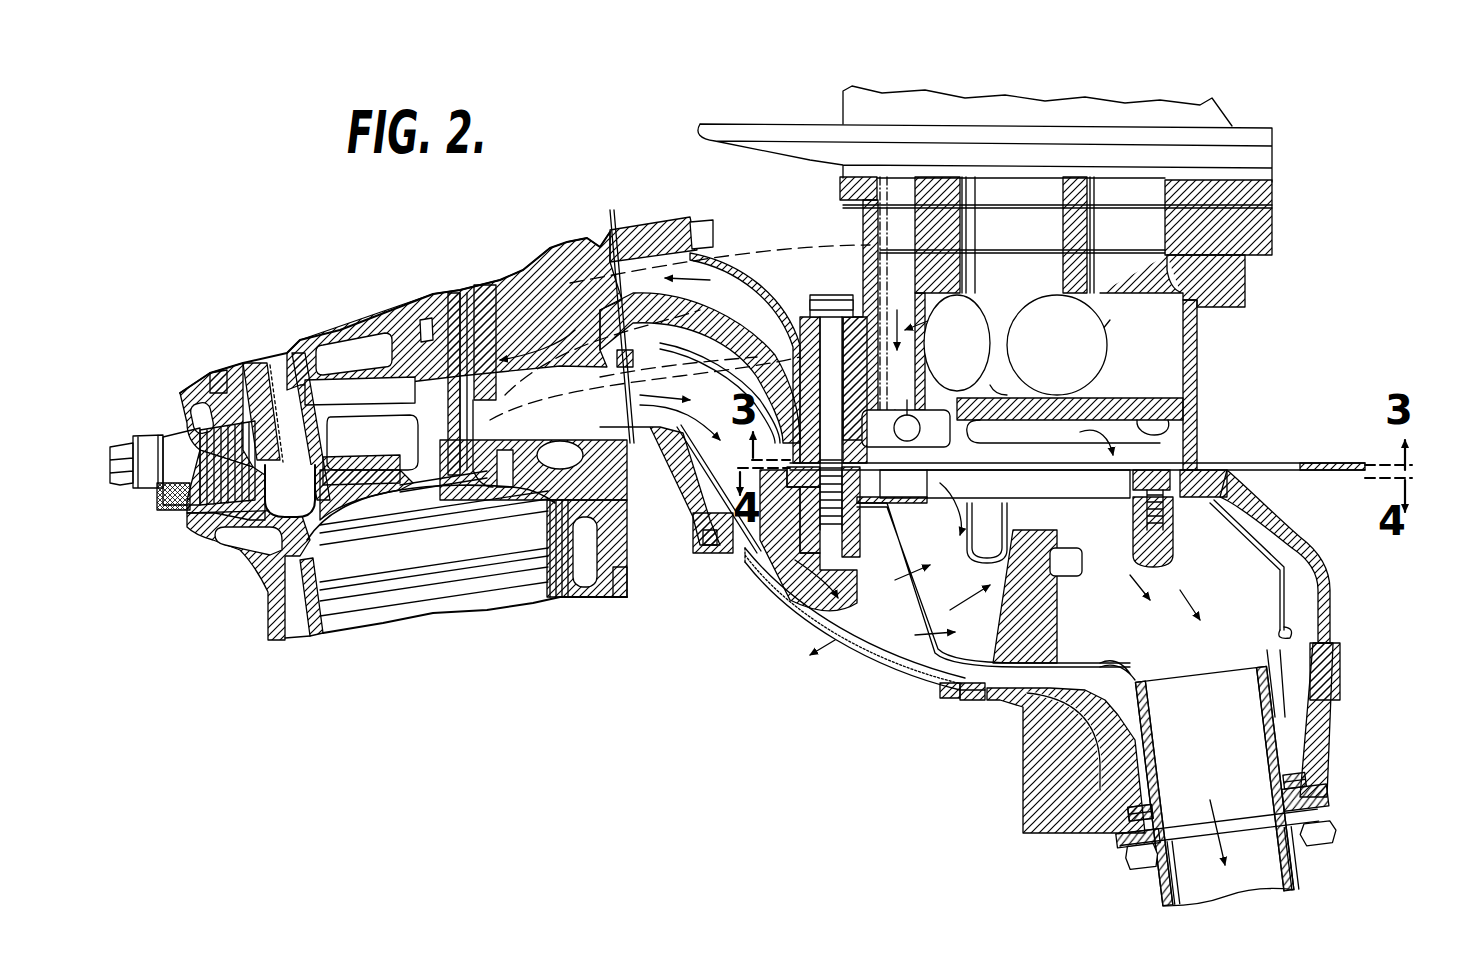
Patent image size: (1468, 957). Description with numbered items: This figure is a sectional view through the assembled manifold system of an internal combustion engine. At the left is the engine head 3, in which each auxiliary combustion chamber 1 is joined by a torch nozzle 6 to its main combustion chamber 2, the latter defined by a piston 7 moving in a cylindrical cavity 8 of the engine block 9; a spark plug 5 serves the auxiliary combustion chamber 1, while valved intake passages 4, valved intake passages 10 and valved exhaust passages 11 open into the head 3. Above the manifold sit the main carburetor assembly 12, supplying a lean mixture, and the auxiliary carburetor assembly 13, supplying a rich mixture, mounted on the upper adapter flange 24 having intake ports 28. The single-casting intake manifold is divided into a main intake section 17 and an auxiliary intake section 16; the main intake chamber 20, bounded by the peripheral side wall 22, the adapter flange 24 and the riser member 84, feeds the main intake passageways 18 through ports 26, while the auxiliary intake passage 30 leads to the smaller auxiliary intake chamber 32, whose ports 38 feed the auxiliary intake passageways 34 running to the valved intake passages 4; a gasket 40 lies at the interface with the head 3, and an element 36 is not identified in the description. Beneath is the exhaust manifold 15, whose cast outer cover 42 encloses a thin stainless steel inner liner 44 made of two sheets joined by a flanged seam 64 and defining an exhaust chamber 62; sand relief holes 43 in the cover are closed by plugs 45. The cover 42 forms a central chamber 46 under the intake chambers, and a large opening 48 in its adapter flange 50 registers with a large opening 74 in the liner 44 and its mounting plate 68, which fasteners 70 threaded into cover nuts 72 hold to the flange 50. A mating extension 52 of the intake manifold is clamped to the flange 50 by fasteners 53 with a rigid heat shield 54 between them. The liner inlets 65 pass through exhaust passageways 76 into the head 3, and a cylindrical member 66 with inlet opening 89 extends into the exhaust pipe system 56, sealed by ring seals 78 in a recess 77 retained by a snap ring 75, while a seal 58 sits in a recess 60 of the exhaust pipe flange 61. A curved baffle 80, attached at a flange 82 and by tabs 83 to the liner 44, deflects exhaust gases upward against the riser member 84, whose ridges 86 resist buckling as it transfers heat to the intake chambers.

The auxiliary combustion chamber 1 is at (220, 540).
The main combustion chamber 2 is at (385, 478).
The engine head 3 is at (180, 405).
The valved intake passages 4 is at (310, 375).
The spark plug 5 is at (172, 512).
The torch nozzle 6 is at (320, 490).
The piston 7 is at (432, 608).
The cylindrical cavity 8 is at (548, 600).
The engine block 9 is at (622, 597).
The valved intake passages 10 is at (585, 262).
The valved exhaust passages 11 is at (628, 470).
The main carburetor assembly 12 is at (1133, 190).
The auxiliary carburetor assembly 13 is at (895, 185).
The exhaust manifold 15 is at (830, 638).
The auxiliary intake section 16 is at (780, 248).
The main intake section 17 is at (815, 262).
The main intake passageways 18 is at (822, 265).
The main intake chamber 20 is at (1170, 330).
The peripheral side wall 22 is at (1195, 368).
The upper adapter flange 24 is at (1238, 290).
The ports 26 is at (975, 360).
The intake ports 28 is at (1180, 290).
The auxiliary intake passage 30 is at (905, 265).
The auxiliary intake chamber 32 is at (950, 430).
The auxiliary intake passageways 34 is at (660, 245).
The gasket 36 is at (1200, 390).
The ports 38 is at (892, 485).
The gasket 40 is at (603, 240).
The outer cover 42 is at (1313, 547).
The sand relief holes 43 is at (1330, 660).
The inner liner 44 is at (1265, 542).
The plugs 45 is at (1335, 680).
The central chamber 46 is at (1310, 597).
The large opening 48 is at (1135, 478).
The adapter flange 50 is at (1220, 478).
The mating extension 52 is at (1328, 447).
The fasteners 53 is at (830, 295).
The heat shield 54 is at (1335, 465).
The exhaust pipe system 56 is at (1295, 875).
The seal 58 is at (1312, 805).
The recess 60 is at (1316, 838).
The exhaust pipe flange 61 is at (1125, 860).
The exhaust chamber 62 is at (1215, 593).
The flanged seam 64 is at (1283, 625).
The inlets 65 is at (615, 375).
The cylindrical member 66 is at (1257, 722).
The mounting plate 68 is at (1215, 510).
The fasteners 70 is at (1200, 455).
The cover nuts 72 is at (985, 545).
The large opening 74 is at (1135, 505).
The snap ring 75 is at (1165, 812).
The exhaust passageways 76 is at (735, 580).
The recess 77 is at (1120, 835).
The ring seals 78 is at (1140, 797).
The baffle 80 is at (1030, 615).
The flange 82 is at (1025, 653).
The tabs 83 is at (1068, 583).
The riser member 84 is at (1140, 420).
The ridges 86 is at (1200, 430).
The inlet opening 89 is at (1215, 625).